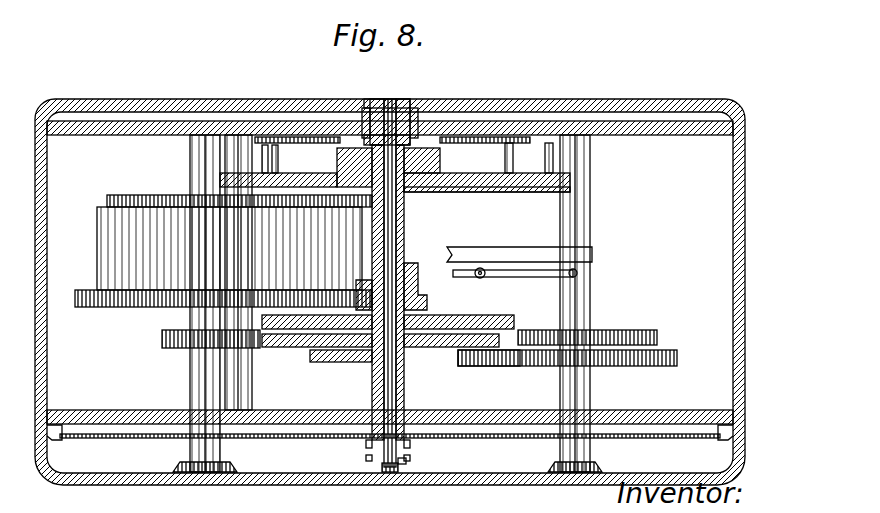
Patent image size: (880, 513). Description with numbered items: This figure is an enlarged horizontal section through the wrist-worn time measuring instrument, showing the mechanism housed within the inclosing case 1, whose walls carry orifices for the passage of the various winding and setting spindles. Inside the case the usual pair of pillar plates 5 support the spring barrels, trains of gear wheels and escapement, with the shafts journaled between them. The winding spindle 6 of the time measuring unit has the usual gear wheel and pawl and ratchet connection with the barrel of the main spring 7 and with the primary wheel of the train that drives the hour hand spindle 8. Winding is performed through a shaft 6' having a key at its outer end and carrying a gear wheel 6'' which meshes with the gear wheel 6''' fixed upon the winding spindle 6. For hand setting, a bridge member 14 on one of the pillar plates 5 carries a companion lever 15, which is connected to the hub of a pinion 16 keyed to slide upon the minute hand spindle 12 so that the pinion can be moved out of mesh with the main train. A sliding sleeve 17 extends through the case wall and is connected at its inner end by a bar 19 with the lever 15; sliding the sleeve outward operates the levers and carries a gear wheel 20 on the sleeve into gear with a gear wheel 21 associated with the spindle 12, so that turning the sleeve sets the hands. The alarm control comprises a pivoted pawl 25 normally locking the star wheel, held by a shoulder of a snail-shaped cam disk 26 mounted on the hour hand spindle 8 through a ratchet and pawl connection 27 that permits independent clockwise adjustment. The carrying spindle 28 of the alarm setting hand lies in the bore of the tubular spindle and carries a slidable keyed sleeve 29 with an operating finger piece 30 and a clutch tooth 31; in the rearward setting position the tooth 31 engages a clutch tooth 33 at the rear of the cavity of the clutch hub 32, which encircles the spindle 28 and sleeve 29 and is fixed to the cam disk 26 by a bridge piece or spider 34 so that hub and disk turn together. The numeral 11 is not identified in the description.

The inclosing case 1 is at (152, 100).
The pillar plates 5 is at (143, 135).
The winding spindle 6 is at (223, 272).
The shaft 6' is at (197, 303).
The gear wheel 6'' is at (191, 334).
The gear wheel 6''' is at (388, 345).
The main spring 7 is at (223, 251).
The hour hand spindle 8 is at (406, 460).
The plate 11 is at (489, 370).
The minute hand spindle 12 is at (404, 375).
The bridge member 14 is at (507, 258).
The companion lever 15 is at (516, 277).
The pinion 16 is at (427, 300).
The sliding sleeve 17 is at (586, 310).
The bar 19 is at (578, 273).
The gear wheel 20 is at (648, 330).
The gear wheel 21 is at (677, 358).
The pivoted pawl 25 is at (575, 183).
The cam disk 26 is at (476, 192).
The ratchet and pawl connection 27 is at (440, 160).
The carrying spindle of the alarm setting hand 28 is at (390, 473).
The sleeve 29 is at (392, 100).
The operating finger piece 30 is at (378, 104).
The clutch tooth 31 is at (337, 152).
The clutch hub 32 is at (416, 120).
The clutch tooth 33 is at (370, 112).
The bridge piece or spider 34 is at (355, 140).